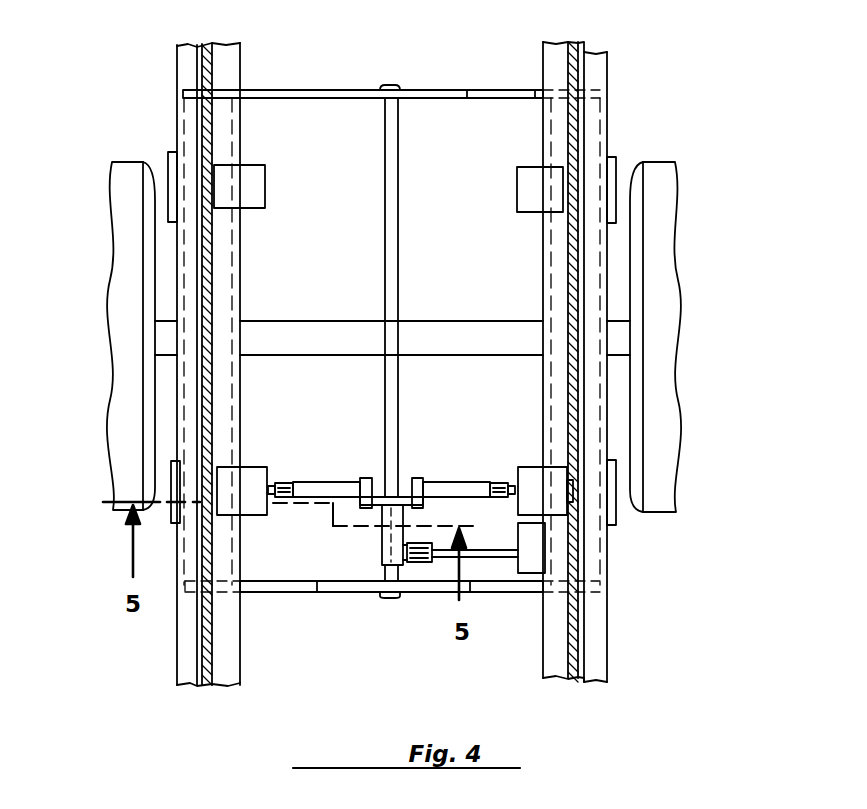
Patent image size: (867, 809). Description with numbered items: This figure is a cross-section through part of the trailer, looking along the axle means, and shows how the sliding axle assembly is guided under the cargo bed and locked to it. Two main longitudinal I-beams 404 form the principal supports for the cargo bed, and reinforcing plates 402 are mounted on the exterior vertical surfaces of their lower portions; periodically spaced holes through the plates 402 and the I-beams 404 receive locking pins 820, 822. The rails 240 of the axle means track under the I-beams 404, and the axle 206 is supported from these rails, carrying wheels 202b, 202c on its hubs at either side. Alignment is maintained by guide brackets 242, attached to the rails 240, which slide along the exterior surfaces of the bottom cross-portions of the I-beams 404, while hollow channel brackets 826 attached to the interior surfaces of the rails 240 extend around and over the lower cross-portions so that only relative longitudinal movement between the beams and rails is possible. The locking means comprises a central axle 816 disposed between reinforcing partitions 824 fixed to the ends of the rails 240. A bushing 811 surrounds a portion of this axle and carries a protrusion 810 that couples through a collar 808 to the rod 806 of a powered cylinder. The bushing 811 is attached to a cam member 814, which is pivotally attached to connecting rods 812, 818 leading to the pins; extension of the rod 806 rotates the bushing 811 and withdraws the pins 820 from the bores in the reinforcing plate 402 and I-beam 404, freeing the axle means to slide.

The wheel 202b is at (122, 240).
The wheel 202c is at (660, 218).
The axle 206 is at (317, 322).
The rail 240 is at (247, 258).
The guide bracket 242 is at (170, 165).
The reinforcing plate 402 is at (585, 659).
The I-beam 404 is at (222, 72).
The rod 806 is at (502, 557).
The collar 808 is at (428, 563).
The protrusion 810 is at (405, 565).
The bushing 811 is at (380, 540).
The connecting rod 812 is at (460, 480).
The cam member 814 is at (377, 480).
The central axle 816 is at (392, 232).
The connecting rod 818 is at (348, 480).
The locking pin 820 is at (273, 480).
The locking pin 822 is at (513, 480).
The reinforcing partition 824 is at (352, 88).
The hollow channel bracket 826 is at (255, 192).